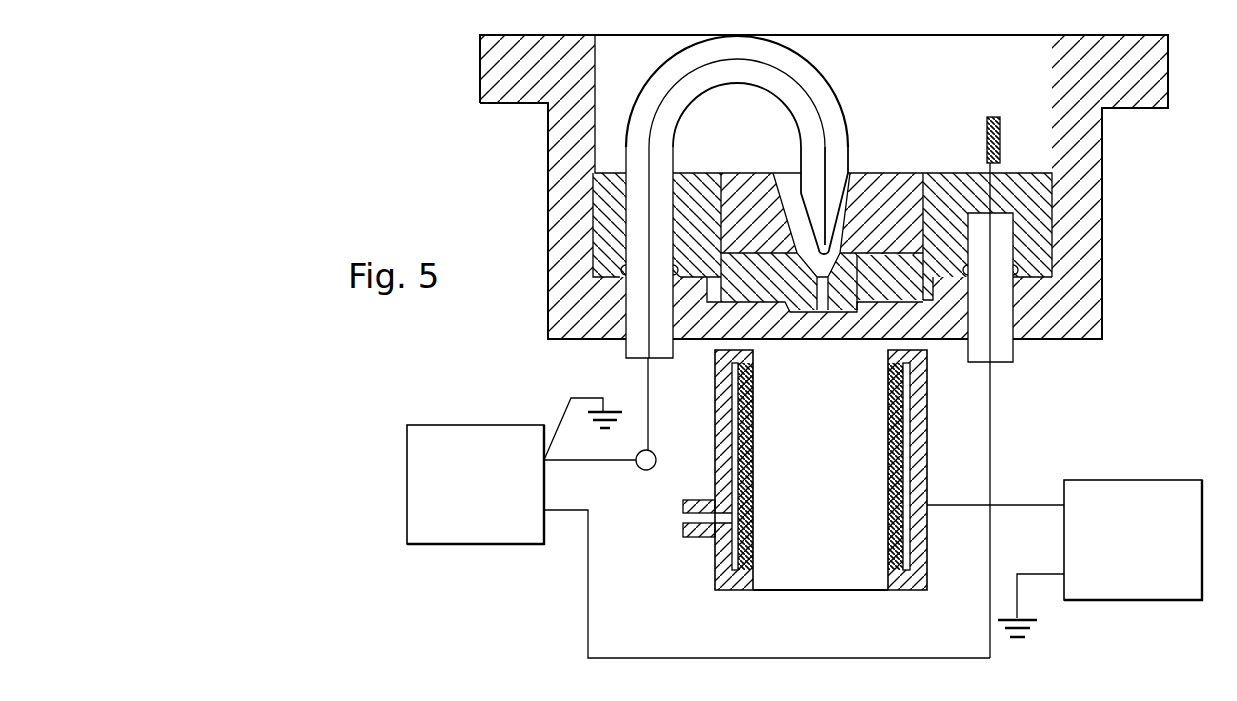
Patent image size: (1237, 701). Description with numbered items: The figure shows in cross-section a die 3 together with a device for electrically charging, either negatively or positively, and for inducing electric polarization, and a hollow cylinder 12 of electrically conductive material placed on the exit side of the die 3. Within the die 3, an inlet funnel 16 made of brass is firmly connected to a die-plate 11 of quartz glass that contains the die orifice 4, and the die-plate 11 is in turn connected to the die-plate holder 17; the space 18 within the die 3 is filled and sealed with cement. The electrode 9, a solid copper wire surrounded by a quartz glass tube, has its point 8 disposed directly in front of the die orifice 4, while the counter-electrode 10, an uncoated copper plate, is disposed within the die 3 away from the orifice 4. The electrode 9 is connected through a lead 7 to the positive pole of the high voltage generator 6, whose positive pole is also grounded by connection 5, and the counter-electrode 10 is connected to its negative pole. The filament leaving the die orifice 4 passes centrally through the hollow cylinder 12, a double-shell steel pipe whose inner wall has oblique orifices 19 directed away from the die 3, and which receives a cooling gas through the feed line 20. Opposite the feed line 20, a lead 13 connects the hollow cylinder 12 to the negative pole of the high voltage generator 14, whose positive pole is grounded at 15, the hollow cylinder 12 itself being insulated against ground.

The die 3 is at (1118, 162).
The die orifice 4 is at (818, 314).
The contact switch 5 is at (544, 460).
The high voltage generator 6 is at (463, 533).
The lead 7 is at (544, 512).
The point 8 is at (840, 190).
The electrode 9 is at (741, 58).
The counter-electrode 10 is at (987, 117).
The die-plate 11 is at (888, 293).
The hollow cylinder 12 is at (918, 418).
The lead 13 is at (1064, 505).
The high voltage generator 14 is at (1177, 583).
The ground connection 15 is at (1064, 575).
The inlet funnel 16 is at (907, 189).
The die-plate holder 17 is at (1080, 270).
The space 18 is at (605, 190).
The oblique orifices 19 is at (893, 548).
The feed line 20 is at (688, 517).